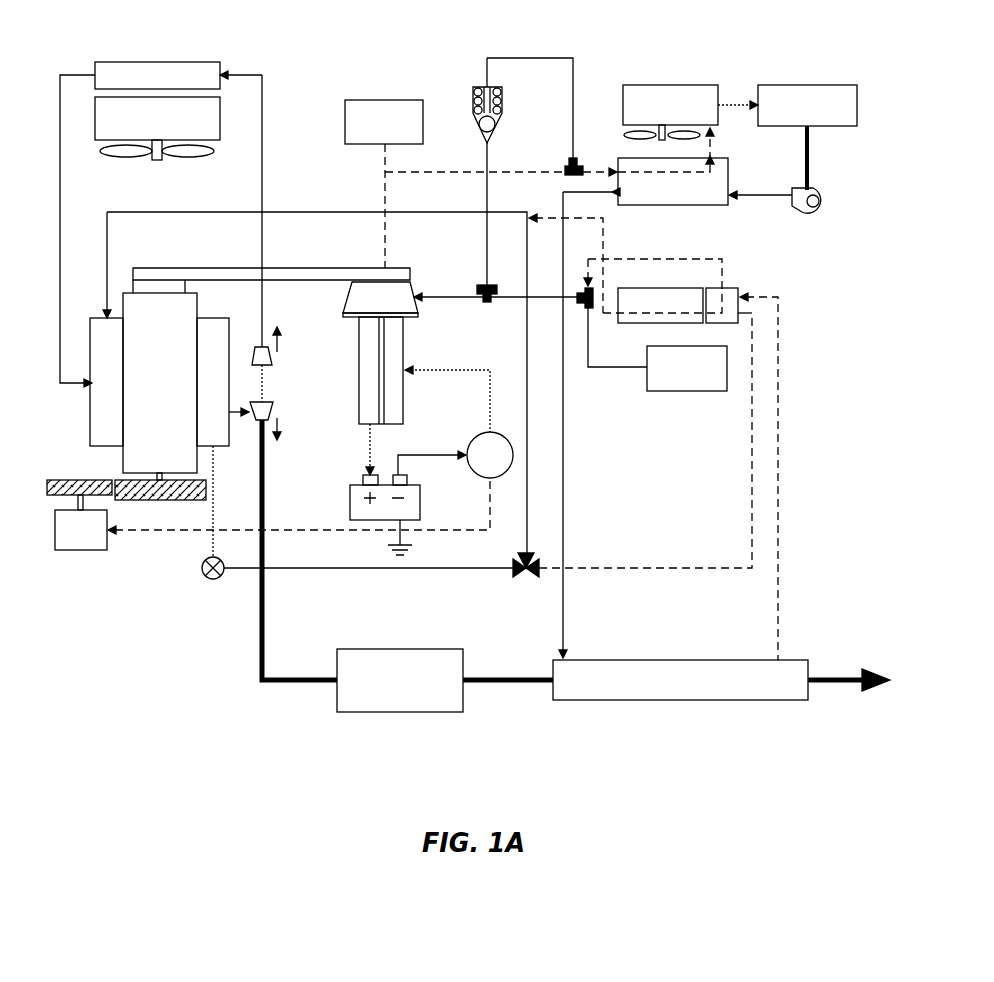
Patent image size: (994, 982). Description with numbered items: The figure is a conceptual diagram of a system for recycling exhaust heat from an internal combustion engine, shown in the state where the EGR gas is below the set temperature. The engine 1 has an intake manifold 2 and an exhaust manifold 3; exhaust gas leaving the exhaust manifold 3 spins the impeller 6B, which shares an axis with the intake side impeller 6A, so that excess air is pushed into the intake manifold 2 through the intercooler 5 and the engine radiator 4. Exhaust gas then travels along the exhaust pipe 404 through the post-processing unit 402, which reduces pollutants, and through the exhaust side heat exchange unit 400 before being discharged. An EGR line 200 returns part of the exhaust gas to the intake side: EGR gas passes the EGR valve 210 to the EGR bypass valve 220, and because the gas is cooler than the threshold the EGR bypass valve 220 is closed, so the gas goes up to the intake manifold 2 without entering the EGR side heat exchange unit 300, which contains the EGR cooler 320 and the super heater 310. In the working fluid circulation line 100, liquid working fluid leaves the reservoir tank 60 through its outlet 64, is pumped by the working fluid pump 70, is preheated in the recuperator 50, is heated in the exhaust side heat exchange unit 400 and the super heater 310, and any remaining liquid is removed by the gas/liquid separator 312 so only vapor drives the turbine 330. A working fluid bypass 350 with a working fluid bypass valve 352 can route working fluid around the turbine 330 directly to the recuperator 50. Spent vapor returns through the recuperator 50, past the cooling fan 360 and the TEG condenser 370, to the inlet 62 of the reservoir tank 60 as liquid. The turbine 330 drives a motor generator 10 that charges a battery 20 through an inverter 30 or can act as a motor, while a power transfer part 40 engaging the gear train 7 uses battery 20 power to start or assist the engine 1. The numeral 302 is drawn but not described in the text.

The diesel engine 1 is at (130, 428).
The intake manifold 2 is at (95, 402).
The exhaust manifold 3 is at (228, 448).
The engine radiator 4 is at (220, 145).
The intercooler 5 is at (157, 62).
The intake side impeller 6A is at (275, 365).
The impeller 6B is at (275, 402).
The gear train 7 is at (168, 500).
The motor generator 10 is at (405, 348).
The battery 20 is at (422, 500).
The inverter 30 is at (475, 436).
The power transfer part 40 is at (82, 553).
The recuperator 50 is at (728, 160).
The reservoir tank 60 is at (805, 85).
The inlet 62 is at (768, 100).
The outlet 64 is at (810, 118).
The working fluid pump 70 is at (828, 200).
The working fluid circulation line 100 is at (780, 603).
The EGR line 200 is at (752, 490).
The EGR valve 210 is at (212, 580).
The EGR bypass valve 220 is at (510, 580).
The EGR side heat exchange unit 300 is at (793, 250).
The control unit 302 is at (385, 100).
The super heater 310 is at (733, 292).
The gas/liquid separator 312 is at (688, 393).
The EGR cooler 320 is at (682, 290).
The turbine 330 is at (420, 318).
The working fluid bypass 350 is at (530, 57).
The working fluid bypass valve 352 is at (478, 87).
The cooling fan 360 is at (625, 137).
The TEG condenser 370 is at (670, 85).
The exhaust side heat exchange unit 400 is at (683, 658).
The post-processing unit 402 is at (398, 648).
The exhaust pipe 404 is at (258, 685).